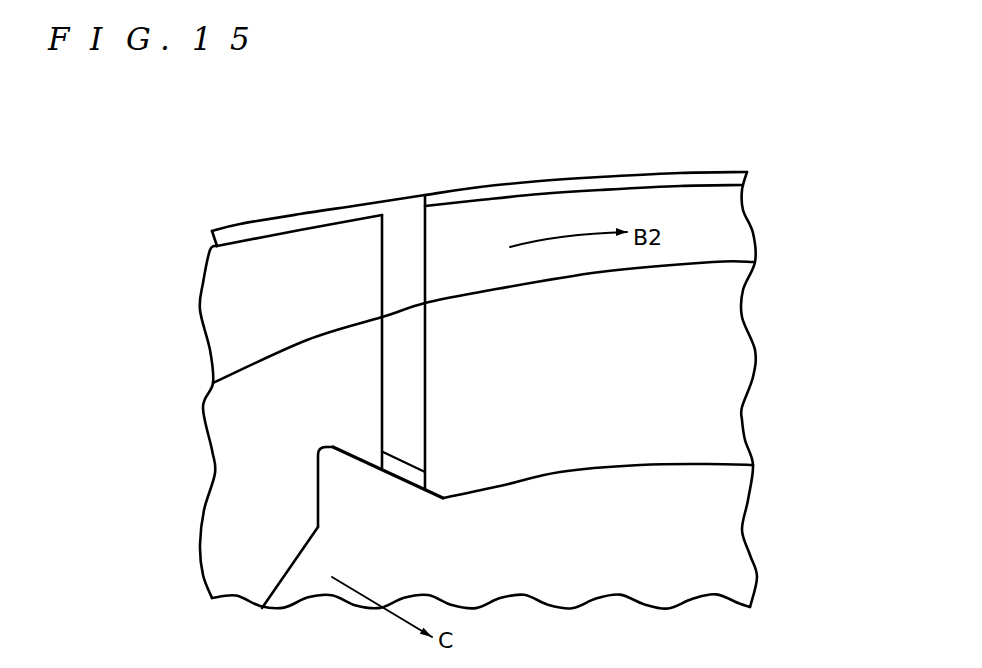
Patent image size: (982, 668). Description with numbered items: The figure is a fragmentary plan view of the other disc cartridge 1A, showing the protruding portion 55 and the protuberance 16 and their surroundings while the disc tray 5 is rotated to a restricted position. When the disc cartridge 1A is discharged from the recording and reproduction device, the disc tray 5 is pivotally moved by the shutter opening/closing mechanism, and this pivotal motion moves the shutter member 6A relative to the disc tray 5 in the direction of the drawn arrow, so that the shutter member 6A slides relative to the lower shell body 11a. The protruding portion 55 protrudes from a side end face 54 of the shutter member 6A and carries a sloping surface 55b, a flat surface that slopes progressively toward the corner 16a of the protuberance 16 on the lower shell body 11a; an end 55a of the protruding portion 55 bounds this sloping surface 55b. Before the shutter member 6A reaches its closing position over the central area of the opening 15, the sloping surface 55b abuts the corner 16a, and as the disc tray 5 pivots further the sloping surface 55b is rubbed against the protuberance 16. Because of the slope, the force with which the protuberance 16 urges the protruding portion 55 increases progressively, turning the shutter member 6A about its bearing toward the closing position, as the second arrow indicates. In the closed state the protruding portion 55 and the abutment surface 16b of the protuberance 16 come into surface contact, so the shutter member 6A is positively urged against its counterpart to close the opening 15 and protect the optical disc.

The disc cartridge 1A is at (425, 126).
The lower shell body 11a is at (288, 220).
The opening 15 is at (683, 237).
The disc tray 5 is at (718, 262).
The shutter member 6A is at (703, 464).
The side end face 54 is at (281, 578).
The protruding portion 55 is at (332, 499).
The corner of protrusion 55a is at (323, 448).
The sloping surface 55b is at (353, 448).
The protuberance 16 is at (406, 453).
The corner 16a is at (377, 452).
The abutment surface 16b is at (403, 466).